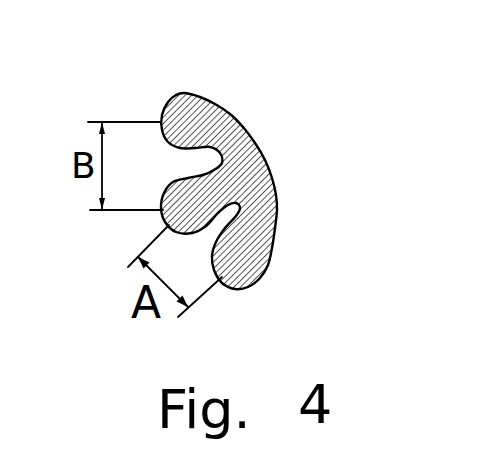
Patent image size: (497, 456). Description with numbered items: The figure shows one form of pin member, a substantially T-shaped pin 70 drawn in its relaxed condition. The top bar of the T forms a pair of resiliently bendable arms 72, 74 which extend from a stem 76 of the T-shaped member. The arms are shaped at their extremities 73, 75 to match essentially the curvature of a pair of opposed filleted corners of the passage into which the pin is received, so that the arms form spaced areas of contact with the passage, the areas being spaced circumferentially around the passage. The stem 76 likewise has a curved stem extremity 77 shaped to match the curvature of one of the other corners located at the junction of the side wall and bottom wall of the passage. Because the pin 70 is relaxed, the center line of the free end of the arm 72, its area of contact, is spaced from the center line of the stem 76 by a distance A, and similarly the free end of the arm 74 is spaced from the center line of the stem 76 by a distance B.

The T-shaped pin 70 is at (243, 127).
The resiliently bendable arm 72 is at (250, 241).
The arm extremity 73 is at (245, 286).
The resiliently bendable arm 74 is at (174, 95).
The arm extremity 75 is at (158, 112).
The stem 76 is at (240, 178).
The middle bead 77 is at (163, 220).